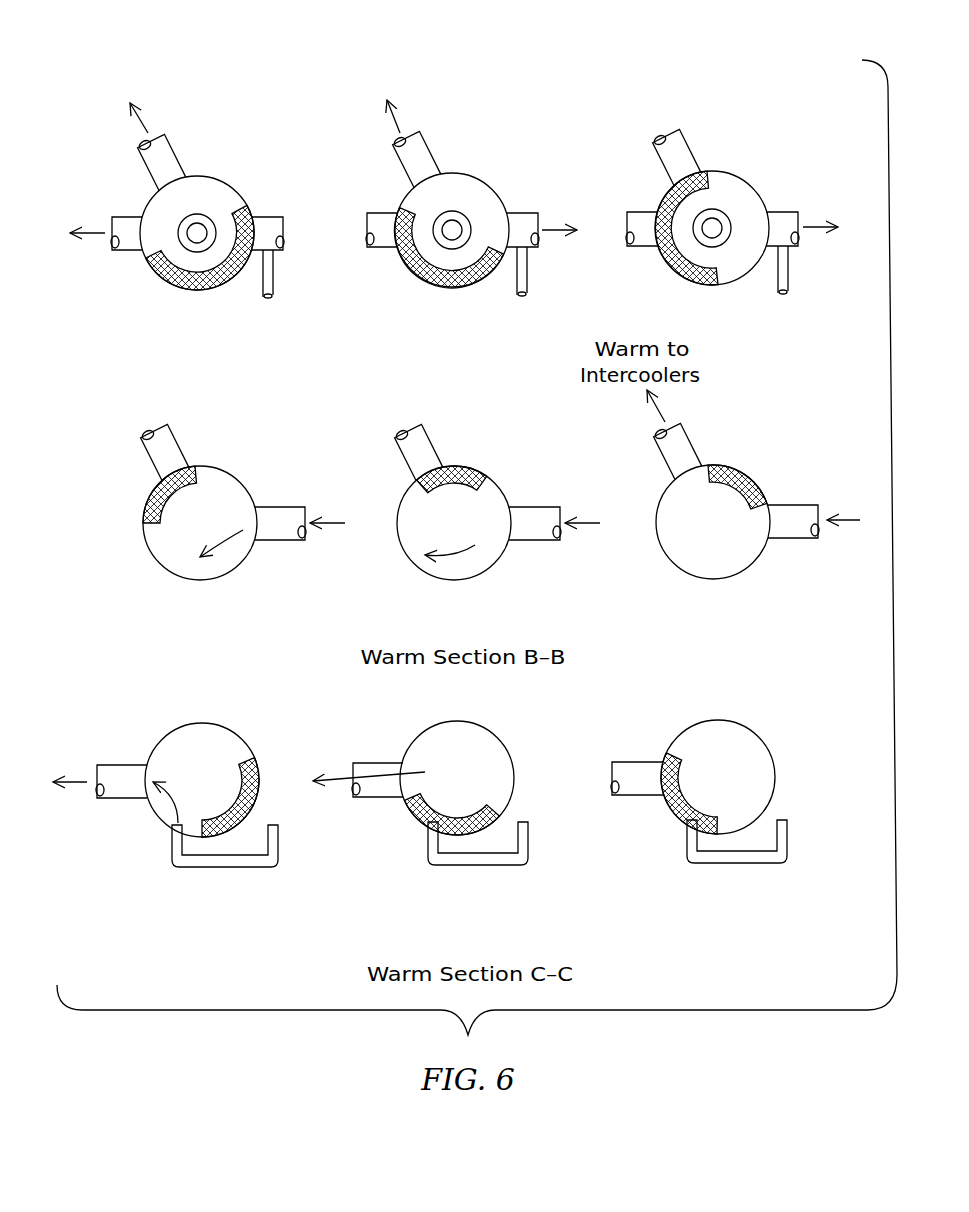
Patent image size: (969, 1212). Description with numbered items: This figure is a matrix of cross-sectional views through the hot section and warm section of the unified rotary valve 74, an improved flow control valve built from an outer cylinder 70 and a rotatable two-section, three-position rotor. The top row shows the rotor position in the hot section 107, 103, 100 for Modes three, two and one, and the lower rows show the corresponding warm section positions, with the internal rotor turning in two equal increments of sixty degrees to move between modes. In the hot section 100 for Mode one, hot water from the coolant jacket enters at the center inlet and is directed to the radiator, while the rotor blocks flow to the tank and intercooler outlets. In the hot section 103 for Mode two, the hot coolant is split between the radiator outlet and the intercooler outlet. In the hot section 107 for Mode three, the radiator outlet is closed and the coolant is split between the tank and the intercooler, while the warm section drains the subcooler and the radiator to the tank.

The outer cylinder 70 is at (201, 214).
The rotary valve 74 is at (78, 972).
The hot section in Mode 1 100 is at (805, 332).
The hot section in Mode 2 103 is at (470, 335).
The hot section in Mode 3 107 is at (118, 340).